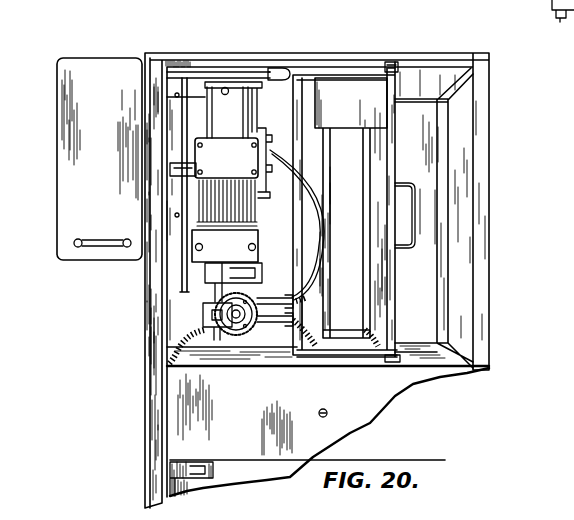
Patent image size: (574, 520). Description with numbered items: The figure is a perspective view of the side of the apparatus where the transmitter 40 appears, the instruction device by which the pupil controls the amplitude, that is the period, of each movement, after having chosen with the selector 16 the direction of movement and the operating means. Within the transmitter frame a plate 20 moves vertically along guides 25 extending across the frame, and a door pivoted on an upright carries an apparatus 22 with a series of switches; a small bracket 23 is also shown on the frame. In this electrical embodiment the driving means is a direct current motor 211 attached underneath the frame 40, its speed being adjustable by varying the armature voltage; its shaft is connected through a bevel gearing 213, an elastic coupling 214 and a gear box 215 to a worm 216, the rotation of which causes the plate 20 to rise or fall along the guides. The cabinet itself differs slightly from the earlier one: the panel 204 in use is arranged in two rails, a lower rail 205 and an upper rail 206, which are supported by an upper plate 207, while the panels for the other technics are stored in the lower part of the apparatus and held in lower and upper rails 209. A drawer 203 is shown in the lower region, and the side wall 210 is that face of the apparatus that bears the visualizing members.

The selector 16 is at (262, 338).
The plate 20 is at (210, 202).
The apparatus 22 is at (238, 148).
The bracket 23 is at (172, 168).
The guides 25 is at (246, 131).
The transmitter 40 is at (175, 233).
The drawer 203 is at (187, 427).
The panel 204 is at (380, 147).
The lower rail 205 is at (286, 66).
The upper rail 206 is at (394, 62).
The upper plate 207 is at (432, 76).
The lower and upper rails 209 is at (192, 463).
The side wall 210 is at (72, 228).
The direct current motor 211 is at (204, 306).
The bevel gearing 213 is at (190, 328).
The elastic coupling 214 is at (216, 286).
The gear box 215 is at (203, 264).
The worm 216 is at (200, 217).